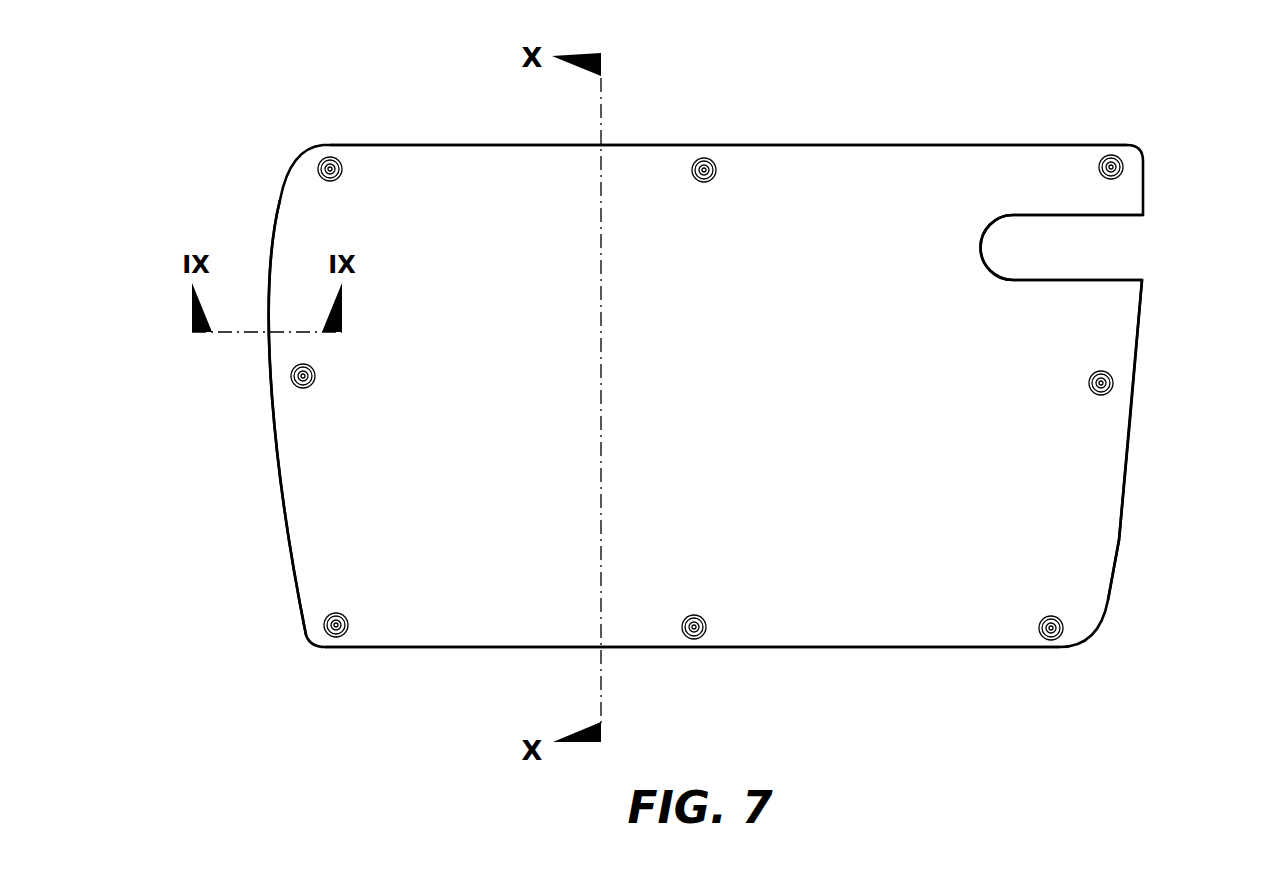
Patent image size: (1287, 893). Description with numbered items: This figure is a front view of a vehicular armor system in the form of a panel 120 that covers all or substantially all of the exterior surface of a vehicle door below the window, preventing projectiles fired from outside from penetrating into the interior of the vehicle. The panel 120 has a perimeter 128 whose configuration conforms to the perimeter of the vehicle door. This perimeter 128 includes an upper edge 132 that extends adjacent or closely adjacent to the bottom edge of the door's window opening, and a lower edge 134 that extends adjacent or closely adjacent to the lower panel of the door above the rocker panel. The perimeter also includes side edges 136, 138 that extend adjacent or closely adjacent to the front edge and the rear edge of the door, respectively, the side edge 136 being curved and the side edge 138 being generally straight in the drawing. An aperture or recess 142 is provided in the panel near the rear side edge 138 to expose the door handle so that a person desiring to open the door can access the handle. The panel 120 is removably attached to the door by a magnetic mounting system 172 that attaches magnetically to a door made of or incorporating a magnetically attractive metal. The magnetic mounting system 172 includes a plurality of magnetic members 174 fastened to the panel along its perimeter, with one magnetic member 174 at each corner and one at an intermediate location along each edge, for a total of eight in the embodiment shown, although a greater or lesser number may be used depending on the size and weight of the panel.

The panel 120 is at (862, 600).
The perimeter 128 is at (1139, 352).
The upper edge 132 is at (796, 145).
The lower edge 134 is at (850, 648).
The side edge 136 is at (277, 490).
The side edge 138 is at (1126, 495).
The aperture or recess 142 is at (1042, 218).
The magnetic mounting system 172 is at (338, 158).
The magnetic members 174 is at (316, 378).